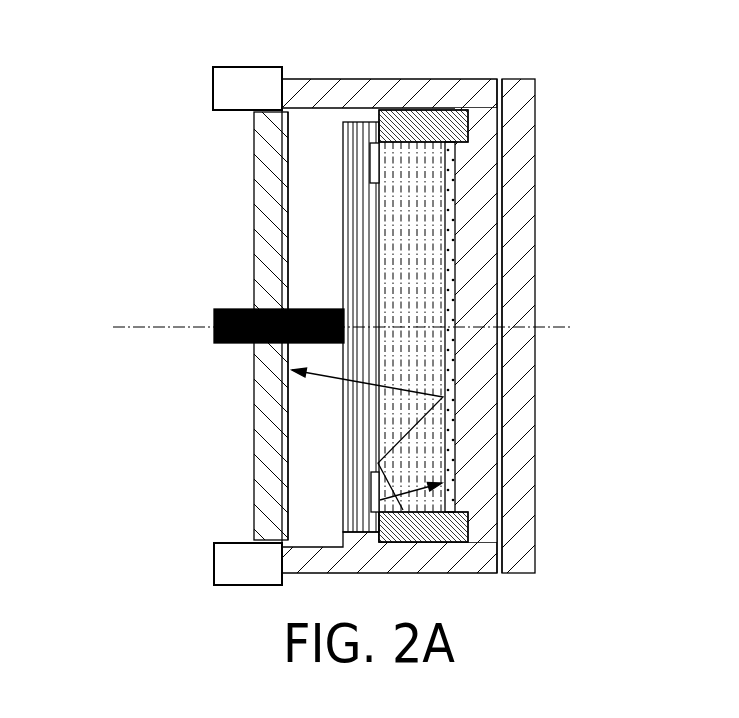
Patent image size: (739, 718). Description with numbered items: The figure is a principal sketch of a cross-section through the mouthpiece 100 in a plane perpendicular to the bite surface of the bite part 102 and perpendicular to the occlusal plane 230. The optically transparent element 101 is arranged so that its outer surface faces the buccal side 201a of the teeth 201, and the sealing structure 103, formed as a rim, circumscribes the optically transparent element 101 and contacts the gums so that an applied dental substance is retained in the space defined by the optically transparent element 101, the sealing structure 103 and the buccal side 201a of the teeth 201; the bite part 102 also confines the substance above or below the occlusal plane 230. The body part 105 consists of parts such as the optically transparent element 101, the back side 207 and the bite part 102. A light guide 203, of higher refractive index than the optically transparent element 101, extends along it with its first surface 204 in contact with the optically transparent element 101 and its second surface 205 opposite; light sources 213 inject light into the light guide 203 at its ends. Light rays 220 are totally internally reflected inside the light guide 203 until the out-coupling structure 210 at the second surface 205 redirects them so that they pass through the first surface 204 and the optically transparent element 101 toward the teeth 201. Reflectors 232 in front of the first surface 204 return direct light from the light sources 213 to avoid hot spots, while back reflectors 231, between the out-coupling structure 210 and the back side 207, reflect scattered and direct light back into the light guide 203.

The mouthpiece 100 is at (128, 70).
The body part 105 is at (360, 98).
The light sources 213 is at (458, 135).
The reflectors 232 is at (372, 158).
The optically transparent element 101 is at (353, 188).
The first surface 204 is at (387, 237).
The sealing structure 103 is at (287, 278).
The occlusal plane 230 is at (320, 327).
The bite part 102 is at (252, 347).
The light rays 220 is at (337, 378).
The buccal side 201a is at (287, 448).
The teeth 201 is at (255, 487).
The light guide 203 is at (437, 163).
The back reflectors 231 is at (497, 210).
The second surface 205 is at (448, 252).
The back side 207 is at (480, 428).
The out-coupling structure 210 is at (455, 468).